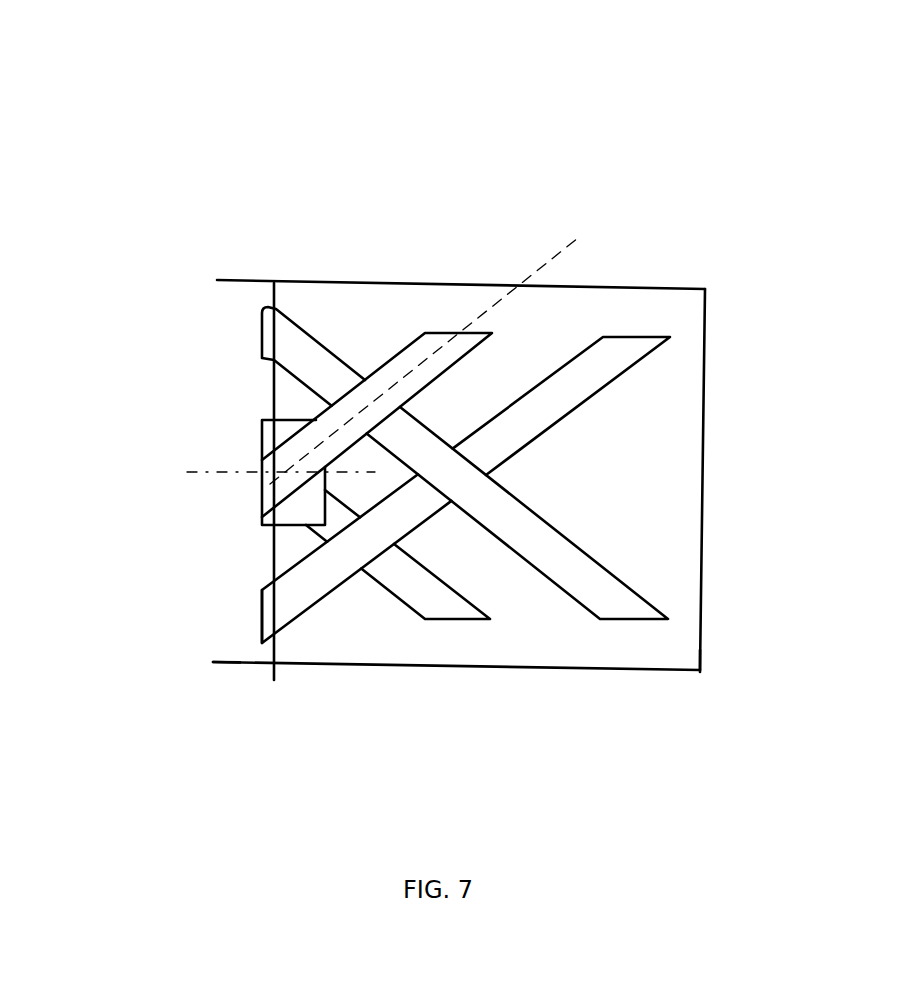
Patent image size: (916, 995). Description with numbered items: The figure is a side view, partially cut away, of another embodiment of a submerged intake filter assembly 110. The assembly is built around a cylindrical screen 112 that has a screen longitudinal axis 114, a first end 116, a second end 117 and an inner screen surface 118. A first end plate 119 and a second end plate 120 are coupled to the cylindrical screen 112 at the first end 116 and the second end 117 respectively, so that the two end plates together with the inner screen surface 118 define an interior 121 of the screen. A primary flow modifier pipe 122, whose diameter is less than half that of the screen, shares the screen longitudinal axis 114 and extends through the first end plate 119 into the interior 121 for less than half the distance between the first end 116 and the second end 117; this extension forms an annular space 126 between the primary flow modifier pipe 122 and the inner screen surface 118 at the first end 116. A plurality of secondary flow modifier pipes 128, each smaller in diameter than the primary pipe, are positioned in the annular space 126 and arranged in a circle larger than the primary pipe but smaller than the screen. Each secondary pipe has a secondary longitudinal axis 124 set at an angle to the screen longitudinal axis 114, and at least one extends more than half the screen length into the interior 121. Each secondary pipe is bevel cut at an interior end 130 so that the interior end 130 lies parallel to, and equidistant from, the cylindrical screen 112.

The submerged intake filter assembly 110 is at (520, 112).
The cylindrical screen 112 is at (544, 463).
The screen longitudinal axis 114 is at (217, 470).
The first end 116 is at (271, 672).
The second end 117 is at (697, 673).
The inner screen surface 118 is at (557, 666).
The first end plate 119 is at (272, 550).
The second end plate 120 is at (702, 592).
The interior 121 is at (674, 485).
The primary flow modifier pipe 122 is at (263, 418).
The secondary longitudinal axis 124 is at (572, 238).
The annular space 126 is at (277, 648).
The secondary flow modifier pipes 128 is at (668, 340).
The interior end 130 is at (445, 331).